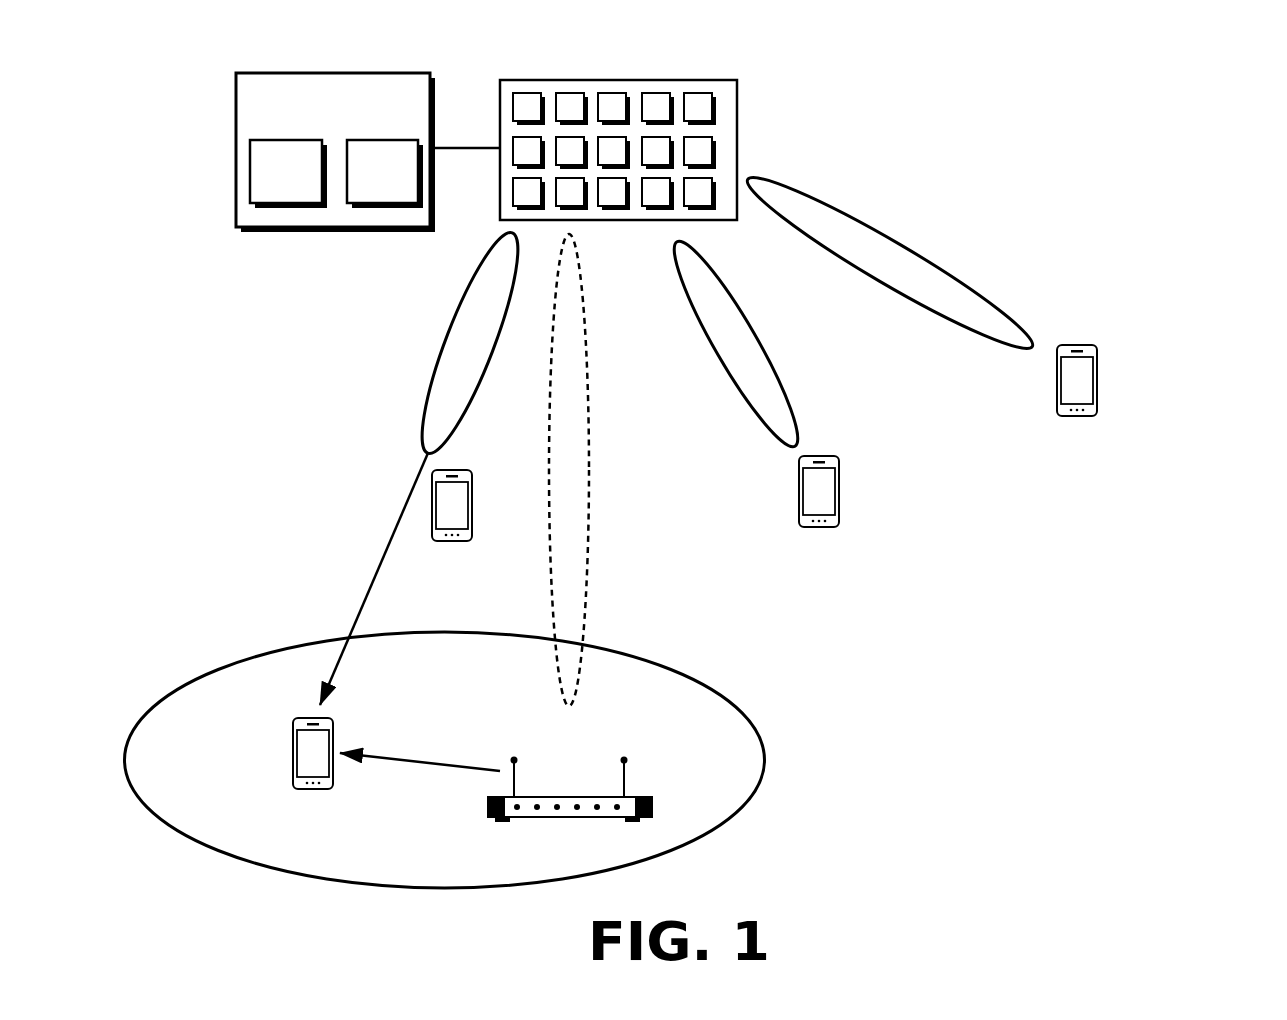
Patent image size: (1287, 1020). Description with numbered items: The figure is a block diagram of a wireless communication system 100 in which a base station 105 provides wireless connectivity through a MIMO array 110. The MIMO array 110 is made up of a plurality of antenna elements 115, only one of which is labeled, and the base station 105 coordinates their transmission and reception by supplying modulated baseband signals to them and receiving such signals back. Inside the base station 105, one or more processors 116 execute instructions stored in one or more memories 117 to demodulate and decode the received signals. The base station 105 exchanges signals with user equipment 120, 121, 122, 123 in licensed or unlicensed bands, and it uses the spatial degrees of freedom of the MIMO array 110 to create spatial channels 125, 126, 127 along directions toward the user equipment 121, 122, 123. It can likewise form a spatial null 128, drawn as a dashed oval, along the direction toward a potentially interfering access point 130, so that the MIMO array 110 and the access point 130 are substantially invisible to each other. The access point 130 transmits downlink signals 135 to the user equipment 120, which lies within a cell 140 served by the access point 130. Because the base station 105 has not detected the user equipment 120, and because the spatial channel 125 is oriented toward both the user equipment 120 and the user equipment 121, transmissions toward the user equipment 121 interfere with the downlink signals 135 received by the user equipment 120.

The wireless communication system 100 is at (1180, 95).
The base station 105 is at (319, 128).
The MIMO array 110 is at (624, 133).
The antenna element 115 is at (513, 108).
The processor 116 is at (272, 180).
The memory 117 is at (369, 180).
The user equipment 120 is at (290, 763).
The user equipment 121 is at (458, 543).
The user equipment 122 is at (818, 530).
The user equipment 123 is at (1079, 418).
The spatial channel 125 is at (441, 373).
The spatial channel 126 is at (773, 372).
The spatial channel 127 is at (965, 287).
The spatial null 128 is at (590, 483).
The access point 130 is at (652, 805).
The downlink signals 135 is at (403, 760).
The cell 140 is at (765, 762).